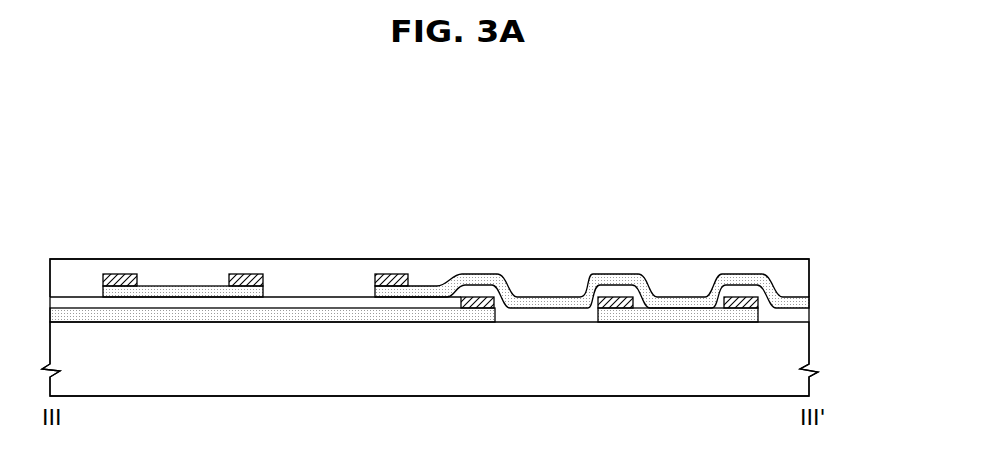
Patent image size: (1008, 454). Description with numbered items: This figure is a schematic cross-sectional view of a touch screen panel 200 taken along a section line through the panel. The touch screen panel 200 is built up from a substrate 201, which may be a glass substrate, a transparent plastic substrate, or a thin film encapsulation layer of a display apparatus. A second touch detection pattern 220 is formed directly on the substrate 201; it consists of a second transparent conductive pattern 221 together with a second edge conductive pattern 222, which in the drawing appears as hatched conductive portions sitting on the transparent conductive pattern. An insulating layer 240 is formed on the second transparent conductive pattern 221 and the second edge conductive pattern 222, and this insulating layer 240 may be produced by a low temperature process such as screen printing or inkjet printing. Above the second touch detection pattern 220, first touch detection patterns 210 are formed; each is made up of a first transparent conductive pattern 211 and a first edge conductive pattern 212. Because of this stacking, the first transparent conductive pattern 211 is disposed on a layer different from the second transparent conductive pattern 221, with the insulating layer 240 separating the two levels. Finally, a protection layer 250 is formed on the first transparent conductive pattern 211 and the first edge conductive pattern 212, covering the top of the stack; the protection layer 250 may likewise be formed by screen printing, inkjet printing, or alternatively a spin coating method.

The touch screen panel 200 is at (778, 172).
The substrate 201 is at (808, 346).
The first touch detection pattern 210 is at (183, 228).
The first transparent conductive pattern 211 is at (182, 292).
The first edge conductive pattern 212 is at (122, 275).
The second touch detection pattern 220 is at (609, 240).
The second transparent conductive pattern 221 is at (677, 313).
The second edge conductive pattern 222 is at (677, 203).
The insulating layer 240 is at (808, 315).
The protection layer 250 is at (808, 275).